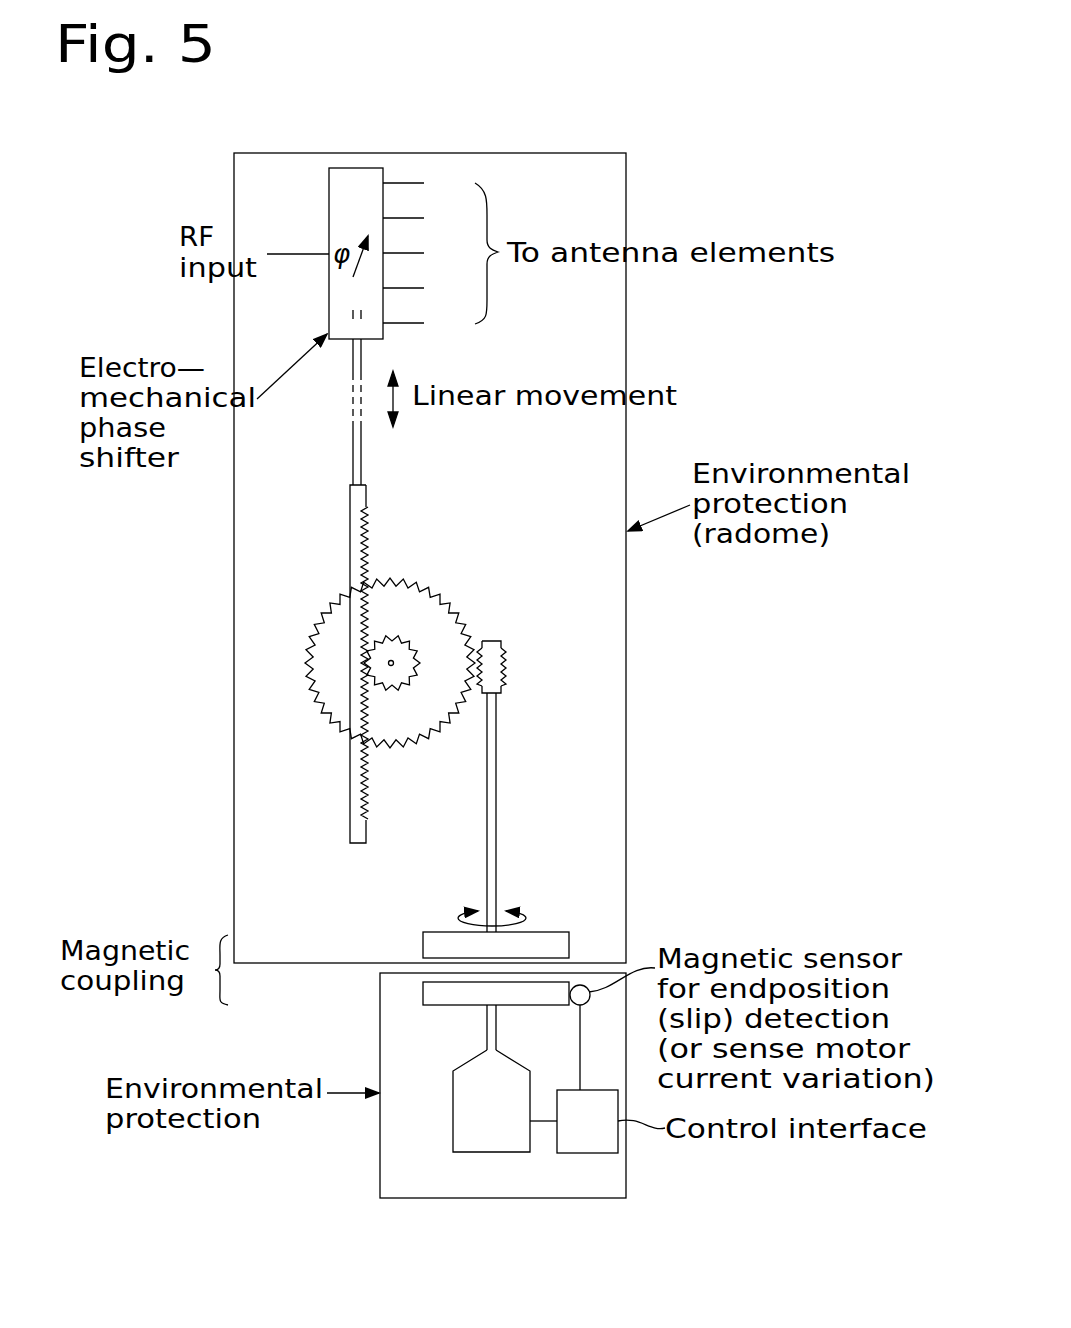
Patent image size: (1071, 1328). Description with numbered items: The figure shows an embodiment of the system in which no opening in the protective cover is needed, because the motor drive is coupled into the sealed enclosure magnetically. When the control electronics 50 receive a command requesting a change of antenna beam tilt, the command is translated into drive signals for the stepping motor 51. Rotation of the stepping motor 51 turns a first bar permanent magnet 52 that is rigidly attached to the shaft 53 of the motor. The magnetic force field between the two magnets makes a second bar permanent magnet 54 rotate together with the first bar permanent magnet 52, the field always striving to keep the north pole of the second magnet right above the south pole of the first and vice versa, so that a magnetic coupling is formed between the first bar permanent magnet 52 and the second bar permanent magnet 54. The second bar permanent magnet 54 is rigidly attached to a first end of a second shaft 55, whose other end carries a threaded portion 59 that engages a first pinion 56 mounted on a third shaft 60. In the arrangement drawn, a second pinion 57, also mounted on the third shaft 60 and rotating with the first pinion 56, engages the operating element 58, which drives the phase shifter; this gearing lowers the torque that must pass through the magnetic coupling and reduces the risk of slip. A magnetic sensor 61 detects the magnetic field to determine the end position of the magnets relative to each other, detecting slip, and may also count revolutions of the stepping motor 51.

The control electronics 50 is at (602, 1148).
The stepping motor 51 is at (488, 1143).
The first bar permanent magnet 52 is at (528, 995).
The shaft of the stepping motor 53 is at (488, 1038).
The second bar permanent magnet 54 is at (538, 945).
The second shaft 55 is at (494, 783).
The first pinion 56 is at (442, 640).
The second pinion 57 is at (397, 653).
The operating element 58 is at (353, 513).
The threaded portion 59 is at (502, 667).
The third shaft 60 is at (392, 663).
The magnetic sensor 61 is at (588, 990).